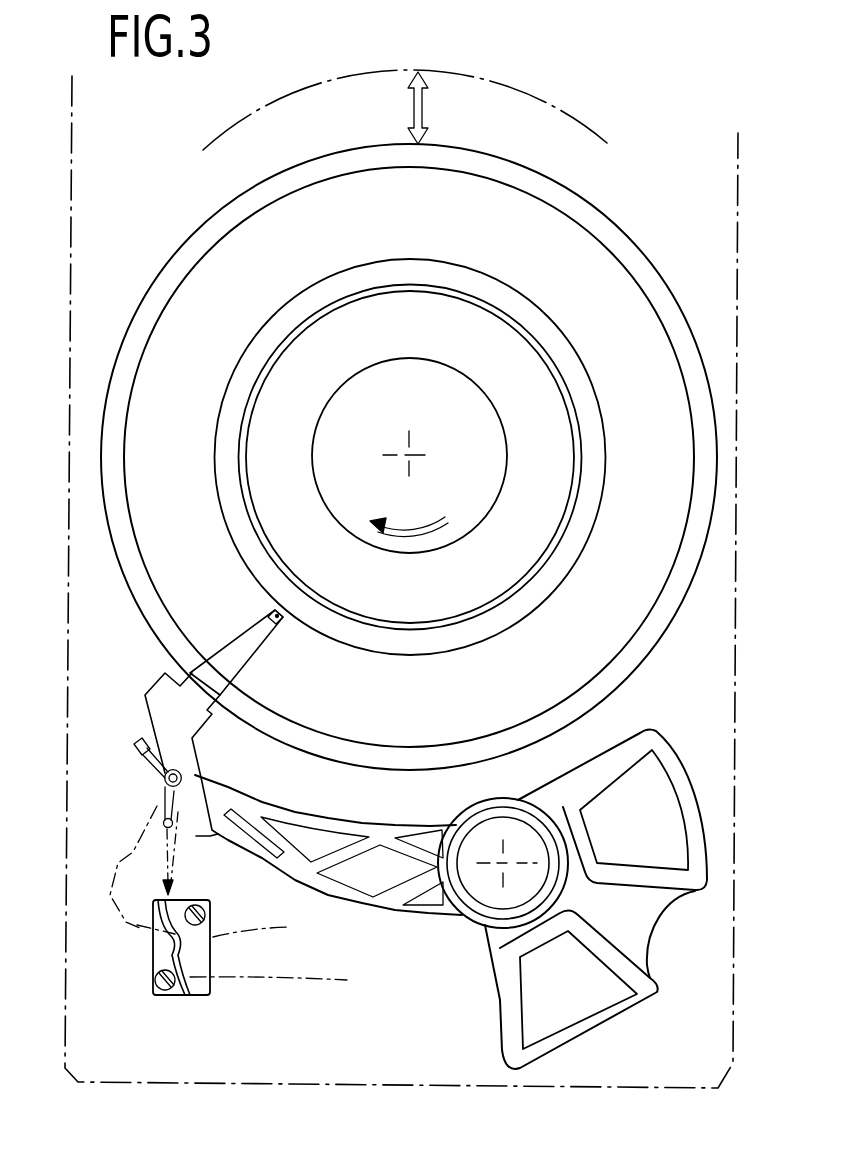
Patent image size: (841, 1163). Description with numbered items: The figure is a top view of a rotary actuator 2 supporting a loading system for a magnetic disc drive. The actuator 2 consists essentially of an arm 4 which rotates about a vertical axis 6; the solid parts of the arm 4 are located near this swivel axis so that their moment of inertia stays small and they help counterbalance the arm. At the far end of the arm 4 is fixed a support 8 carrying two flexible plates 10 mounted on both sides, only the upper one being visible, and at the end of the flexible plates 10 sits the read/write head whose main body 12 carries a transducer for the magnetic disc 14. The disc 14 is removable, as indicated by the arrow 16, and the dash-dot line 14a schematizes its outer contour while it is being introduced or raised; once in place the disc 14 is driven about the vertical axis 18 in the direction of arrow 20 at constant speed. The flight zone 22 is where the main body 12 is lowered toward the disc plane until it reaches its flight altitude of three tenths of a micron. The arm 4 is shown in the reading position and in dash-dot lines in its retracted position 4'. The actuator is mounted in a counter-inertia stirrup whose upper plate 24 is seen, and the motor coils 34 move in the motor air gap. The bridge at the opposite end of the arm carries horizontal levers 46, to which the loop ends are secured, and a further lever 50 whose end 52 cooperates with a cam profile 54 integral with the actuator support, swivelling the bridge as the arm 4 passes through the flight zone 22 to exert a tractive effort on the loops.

The rotary actuator 2 is at (409, 947).
The arm 4 is at (328, 844).
The retracted position of the arm 4' is at (268, 973).
The vertical axis 6 is at (502, 860).
The support 8 is at (153, 687).
The flexible plate 10 is at (243, 660).
The main body 12 is at (263, 611).
The magnetic disc 14 is at (614, 188).
The outer contour of disc 14a is at (537, 96).
The arrow 16 is at (427, 108).
The vertical axis 18 is at (410, 452).
The arrow 20 is at (428, 520).
The flight zone 22 is at (620, 668).
The upper plate 24 is at (593, 630).
The motor coils 34 is at (663, 782).
The lever 46 is at (146, 754).
The lever 50 is at (176, 822).
The end of lever 52 is at (164, 823).
The cam profile 54 is at (158, 925).